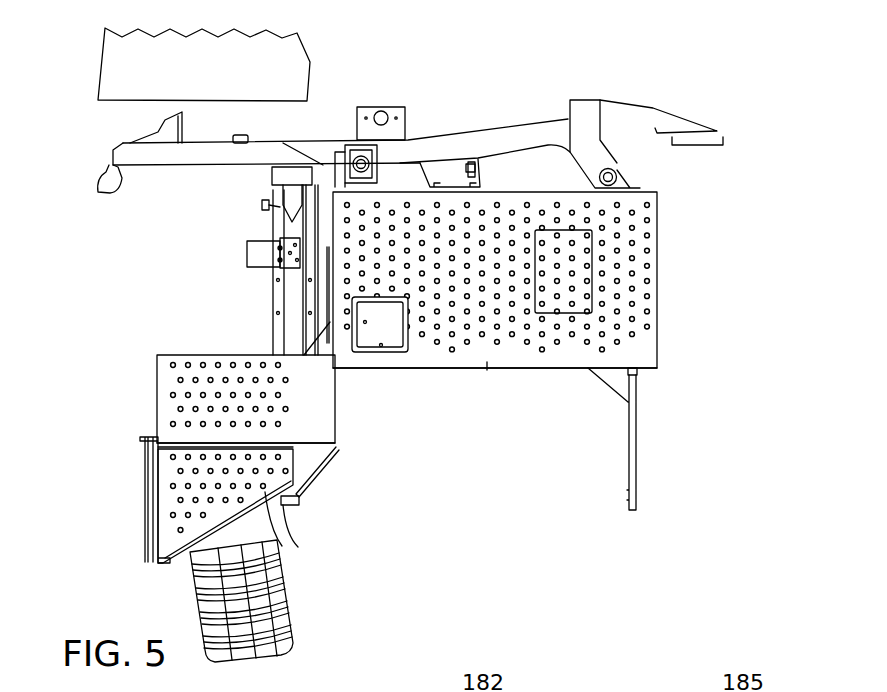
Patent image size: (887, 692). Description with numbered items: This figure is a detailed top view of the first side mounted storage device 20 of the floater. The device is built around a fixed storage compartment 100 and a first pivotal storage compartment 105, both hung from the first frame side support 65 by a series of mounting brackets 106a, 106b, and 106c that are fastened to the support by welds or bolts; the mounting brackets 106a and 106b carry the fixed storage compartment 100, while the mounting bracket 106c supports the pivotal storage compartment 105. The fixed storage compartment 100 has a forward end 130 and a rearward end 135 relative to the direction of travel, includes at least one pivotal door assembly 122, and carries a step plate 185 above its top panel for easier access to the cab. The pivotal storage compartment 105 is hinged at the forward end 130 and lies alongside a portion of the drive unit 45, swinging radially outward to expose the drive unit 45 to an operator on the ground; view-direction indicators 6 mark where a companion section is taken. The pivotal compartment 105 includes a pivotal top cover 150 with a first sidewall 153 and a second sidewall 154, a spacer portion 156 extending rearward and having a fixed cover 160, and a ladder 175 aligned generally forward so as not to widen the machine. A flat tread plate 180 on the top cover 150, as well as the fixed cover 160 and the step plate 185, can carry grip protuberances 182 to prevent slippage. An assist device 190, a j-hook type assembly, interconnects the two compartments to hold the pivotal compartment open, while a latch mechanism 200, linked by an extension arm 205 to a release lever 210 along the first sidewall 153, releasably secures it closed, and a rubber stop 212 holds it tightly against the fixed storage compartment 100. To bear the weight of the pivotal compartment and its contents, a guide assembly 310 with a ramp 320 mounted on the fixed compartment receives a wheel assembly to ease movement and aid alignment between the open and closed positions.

The drive unit 45 is at (204, 65).
The first frame side support 65 is at (220, 157).
The section view indicator FIG. 6 is at (325, 102).
The mounting bracket 106c is at (299, 181).
The mounting bracket 106b is at (459, 168).
The mounting bracket 106a is at (636, 164).
The first side mounted storage device 20 is at (726, 180).
The fixed storage compartment 100 is at (468, 390).
The grip protuberances 182 is at (645, 277).
The step plate 185 is at (641, 351).
The rearward end 135 is at (656, 376).
The pivotal door assembly 122 is at (652, 447).
The assist device 190 is at (309, 330).
The latch mechanism 200 is at (246, 200).
The rubber stop 212 is at (255, 208).
The guide assembly 310 is at (222, 258).
The ramp 320 is at (247, 259).
The forward end 130 is at (350, 377).
The fixed cover 160 is at (325, 424).
The spacer portion 156 is at (345, 412).
The first pivotal storage compartment 105 is at (325, 504).
The pivotal top cover 150 is at (303, 536).
The second sidewall 154 is at (284, 555).
The ladder 175 is at (298, 642).
The first sidewall 153 is at (142, 550).
The extension arm 205 is at (143, 447).
The flat tread plate 180 is at (157, 502).
The release lever 210 is at (153, 532).